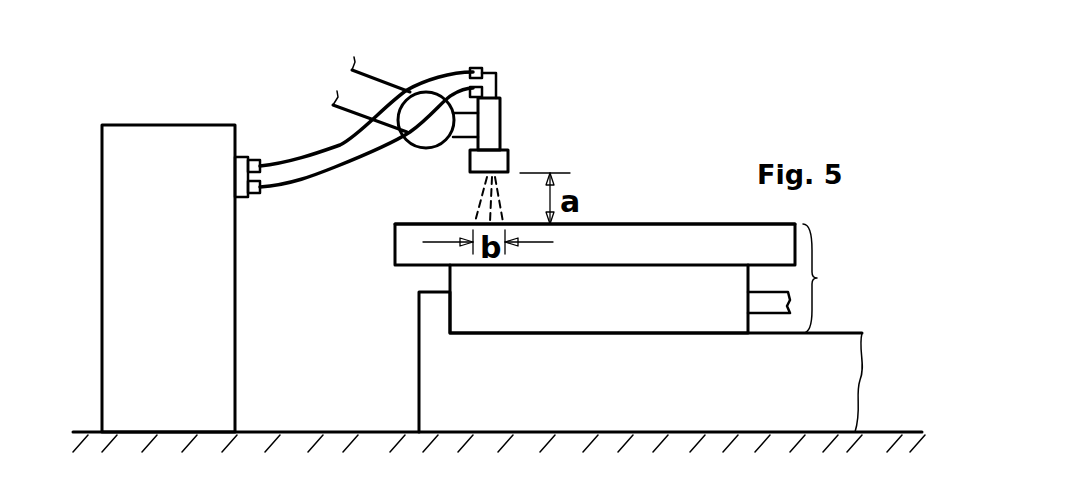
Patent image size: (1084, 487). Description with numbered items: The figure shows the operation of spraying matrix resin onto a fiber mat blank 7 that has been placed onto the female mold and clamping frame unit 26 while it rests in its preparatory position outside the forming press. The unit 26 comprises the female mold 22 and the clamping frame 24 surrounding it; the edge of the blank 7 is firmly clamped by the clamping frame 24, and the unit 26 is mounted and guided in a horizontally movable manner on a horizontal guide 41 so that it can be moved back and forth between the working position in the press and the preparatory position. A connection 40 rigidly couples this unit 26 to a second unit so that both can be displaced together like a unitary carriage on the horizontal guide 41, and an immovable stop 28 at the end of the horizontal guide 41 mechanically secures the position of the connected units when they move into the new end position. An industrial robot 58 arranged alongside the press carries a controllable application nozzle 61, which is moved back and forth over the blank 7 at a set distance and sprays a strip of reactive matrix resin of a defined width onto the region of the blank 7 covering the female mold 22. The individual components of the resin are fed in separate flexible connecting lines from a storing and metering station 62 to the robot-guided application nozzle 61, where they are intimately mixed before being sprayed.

The fiber mat blank 7 is at (617, 222).
The female mold 22 is at (622, 322).
The clamping frame 24 is at (408, 242).
The female mold/clamping frame unit 26 is at (827, 278).
The immovable stop 28 is at (430, 313).
The connection 40 is at (770, 316).
The horizontal guide 41 is at (837, 332).
The industrial robot 58 is at (378, 88).
The application nozzle 61 is at (496, 127).
The storing and metering station 62 is at (188, 283).